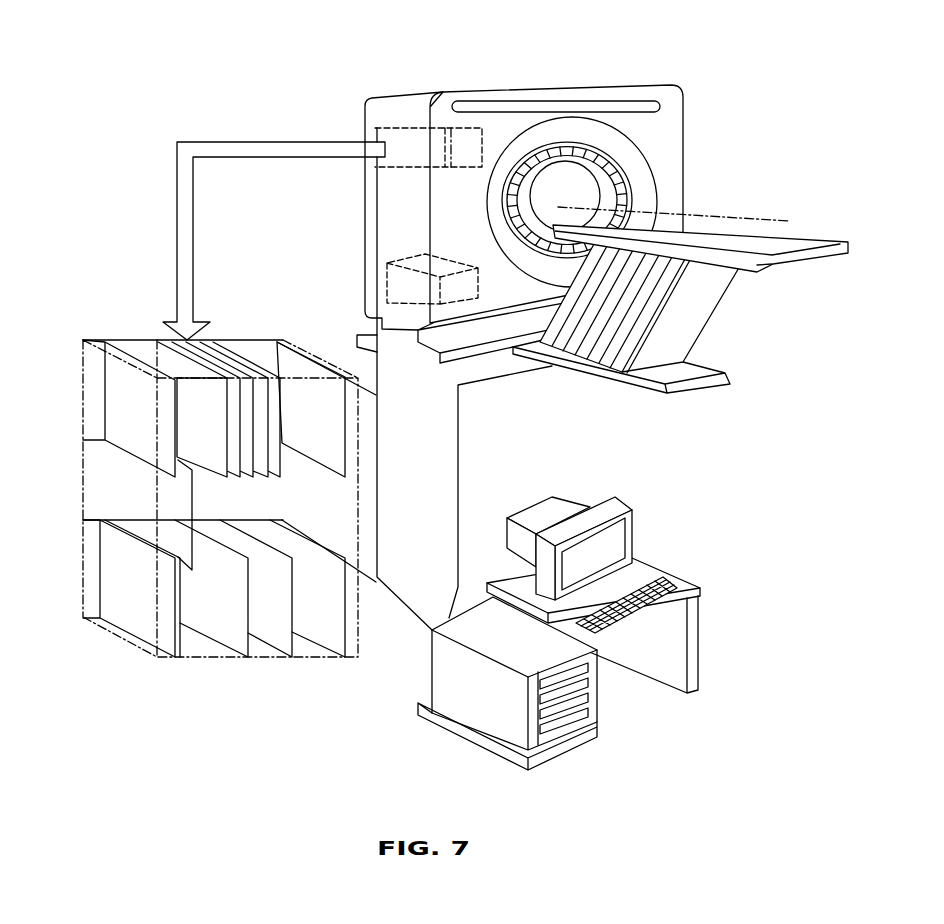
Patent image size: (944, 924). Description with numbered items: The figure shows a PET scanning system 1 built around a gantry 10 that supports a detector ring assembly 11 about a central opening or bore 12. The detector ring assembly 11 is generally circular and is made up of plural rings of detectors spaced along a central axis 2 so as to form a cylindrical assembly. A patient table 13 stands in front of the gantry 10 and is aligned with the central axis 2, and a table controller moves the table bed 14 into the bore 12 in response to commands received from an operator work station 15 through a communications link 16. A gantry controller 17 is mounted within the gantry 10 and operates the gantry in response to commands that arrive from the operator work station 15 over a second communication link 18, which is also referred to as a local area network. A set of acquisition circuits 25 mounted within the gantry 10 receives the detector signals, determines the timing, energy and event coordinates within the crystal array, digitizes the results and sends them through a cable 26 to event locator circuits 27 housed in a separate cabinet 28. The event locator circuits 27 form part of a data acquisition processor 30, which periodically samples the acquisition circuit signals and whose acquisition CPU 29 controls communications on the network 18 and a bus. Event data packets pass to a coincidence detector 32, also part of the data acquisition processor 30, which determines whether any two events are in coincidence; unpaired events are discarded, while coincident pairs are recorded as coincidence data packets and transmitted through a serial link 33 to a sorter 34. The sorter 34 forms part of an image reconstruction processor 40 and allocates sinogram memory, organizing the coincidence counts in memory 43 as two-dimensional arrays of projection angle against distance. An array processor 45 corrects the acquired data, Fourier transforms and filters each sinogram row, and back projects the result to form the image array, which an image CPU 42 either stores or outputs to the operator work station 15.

The PET scanning system 1 is at (212, 55).
The central axis 2 is at (758, 213).
The gantry 10 is at (698, 127).
The detector ring assembly 11 is at (638, 180).
The bore 12 is at (565, 207).
The patient table 13 is at (738, 303).
The table bed 14 is at (806, 244).
The operator work station 15 is at (638, 490).
The communications link 16 is at (460, 444).
The gantry controller 17 is at (398, 262).
The second communication link 18 is at (379, 484).
The acquisition circuits 25 is at (398, 128).
The cable 26 is at (197, 256).
The event locator circuits 27 is at (189, 431).
The cabinet 28 is at (200, 660).
The acquisition CPU 29 is at (302, 431).
The data acquisition processor 30 is at (120, 333).
The coincidence detector 32 is at (116, 420).
The serial link 33 is at (194, 506).
The sorter 34 is at (117, 595).
The image reconstruction processor 40 is at (103, 507).
The image CPU 42 is at (307, 608).
The memory 43 is at (199, 600).
The array processor 45 is at (257, 610).